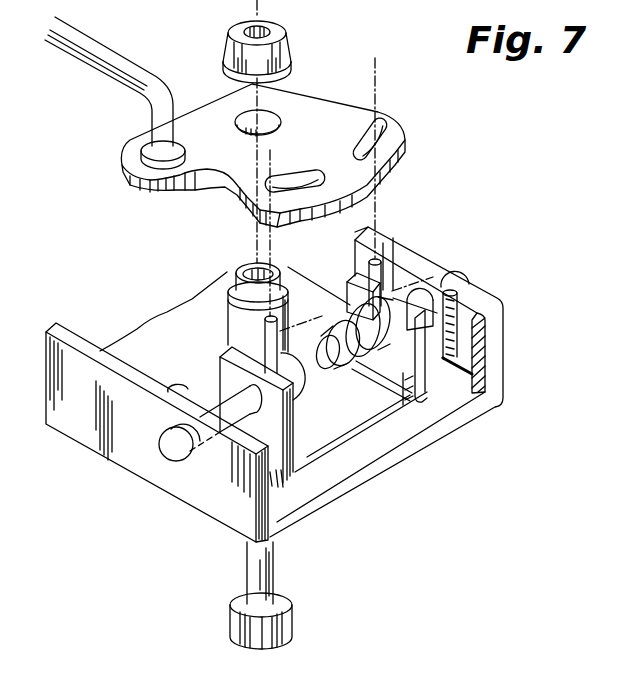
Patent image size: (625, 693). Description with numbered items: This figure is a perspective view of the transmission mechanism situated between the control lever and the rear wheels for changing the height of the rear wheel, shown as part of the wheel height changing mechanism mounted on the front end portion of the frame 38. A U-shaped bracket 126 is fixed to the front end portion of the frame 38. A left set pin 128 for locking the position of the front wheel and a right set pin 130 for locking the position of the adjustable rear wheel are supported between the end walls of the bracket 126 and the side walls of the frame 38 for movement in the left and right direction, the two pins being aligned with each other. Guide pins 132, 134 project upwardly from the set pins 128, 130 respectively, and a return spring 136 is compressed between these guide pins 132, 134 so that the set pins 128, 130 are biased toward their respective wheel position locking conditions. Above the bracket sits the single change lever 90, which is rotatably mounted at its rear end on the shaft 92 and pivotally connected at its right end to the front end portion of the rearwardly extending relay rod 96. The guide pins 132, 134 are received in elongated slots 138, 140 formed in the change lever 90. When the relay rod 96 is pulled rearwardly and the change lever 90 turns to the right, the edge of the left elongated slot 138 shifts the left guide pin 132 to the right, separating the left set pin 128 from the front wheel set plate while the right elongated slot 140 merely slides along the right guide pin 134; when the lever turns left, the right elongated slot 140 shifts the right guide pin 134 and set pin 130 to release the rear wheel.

The frame 38 is at (493, 333).
The change lever 90 is at (297, 105).
The shaft 92 is at (246, 565).
The relay rod 96 is at (100, 72).
The U-shaped bracket 126 is at (420, 372).
The set pin 128 is at (413, 295).
The set pin 130 is at (232, 408).
The guide pin 132 is at (383, 260).
The guide pin 134 is at (268, 345).
The return spring 136 is at (358, 372).
The elongated slot 138 is at (398, 140).
The elongated slot 140 is at (290, 183).